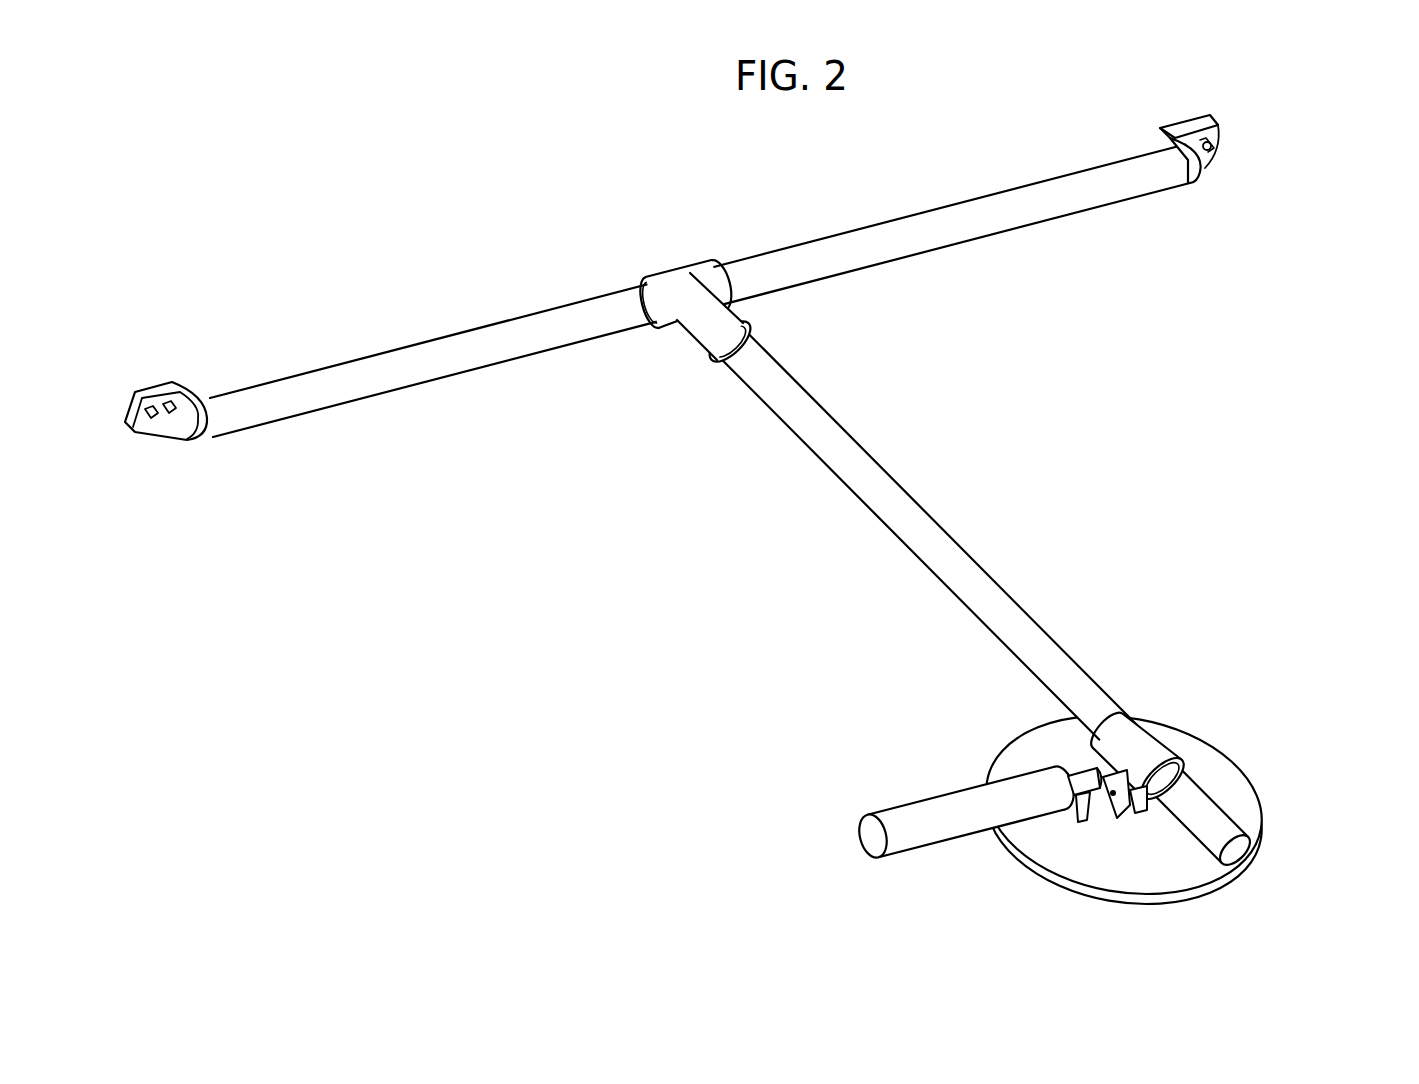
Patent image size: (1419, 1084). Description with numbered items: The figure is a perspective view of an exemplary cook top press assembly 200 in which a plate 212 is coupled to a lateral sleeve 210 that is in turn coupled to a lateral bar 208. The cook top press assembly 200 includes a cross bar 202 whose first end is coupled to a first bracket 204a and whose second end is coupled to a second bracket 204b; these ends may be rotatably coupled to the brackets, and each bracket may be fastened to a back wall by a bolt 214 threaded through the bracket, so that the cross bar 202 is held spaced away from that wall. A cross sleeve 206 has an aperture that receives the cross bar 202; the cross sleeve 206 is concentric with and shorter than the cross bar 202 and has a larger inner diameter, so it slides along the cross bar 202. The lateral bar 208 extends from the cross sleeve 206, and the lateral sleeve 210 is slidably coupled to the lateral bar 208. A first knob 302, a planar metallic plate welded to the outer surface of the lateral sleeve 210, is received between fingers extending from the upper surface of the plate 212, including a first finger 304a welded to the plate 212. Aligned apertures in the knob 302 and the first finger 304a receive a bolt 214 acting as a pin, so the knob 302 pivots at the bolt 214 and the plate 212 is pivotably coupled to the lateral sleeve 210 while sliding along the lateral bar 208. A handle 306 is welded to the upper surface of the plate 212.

The cook top press assembly 200 is at (300, 254).
The cross bar 202 is at (325, 385).
The first bracket 204a is at (183, 392).
The second bracket 204b is at (1220, 121).
The cross sleeve 206 is at (660, 272).
The lateral bar 208 is at (990, 598).
The lateral sleeve 210 is at (1167, 728).
The plate 212 is at (1073, 762).
The bolt 214 is at (172, 418).
The first knob 302 is at (1167, 793).
The first finger 304a is at (1110, 808).
The handle 306 is at (872, 838).